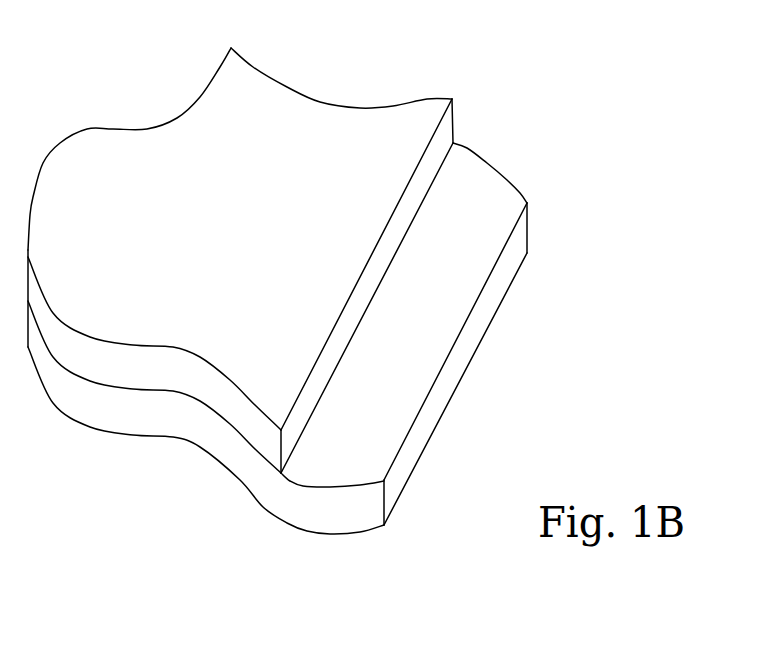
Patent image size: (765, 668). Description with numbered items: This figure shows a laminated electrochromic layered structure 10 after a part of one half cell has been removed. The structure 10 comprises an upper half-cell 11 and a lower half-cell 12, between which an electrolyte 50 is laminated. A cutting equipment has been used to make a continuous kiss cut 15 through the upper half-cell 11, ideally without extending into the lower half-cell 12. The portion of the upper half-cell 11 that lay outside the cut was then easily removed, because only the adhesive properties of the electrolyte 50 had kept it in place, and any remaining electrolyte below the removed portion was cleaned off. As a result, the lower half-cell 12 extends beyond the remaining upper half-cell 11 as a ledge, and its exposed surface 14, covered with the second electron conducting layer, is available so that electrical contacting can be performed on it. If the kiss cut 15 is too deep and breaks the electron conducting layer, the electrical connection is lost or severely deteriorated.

The laminated electrochromic layered structure 10 is at (103, 413).
The upper half-cell 11 is at (445, 131).
The lower half-cell 12 is at (478, 335).
The surface 14 is at (375, 433).
The kiss cut 15 is at (298, 452).
The electrolyte 50 is at (502, 250).